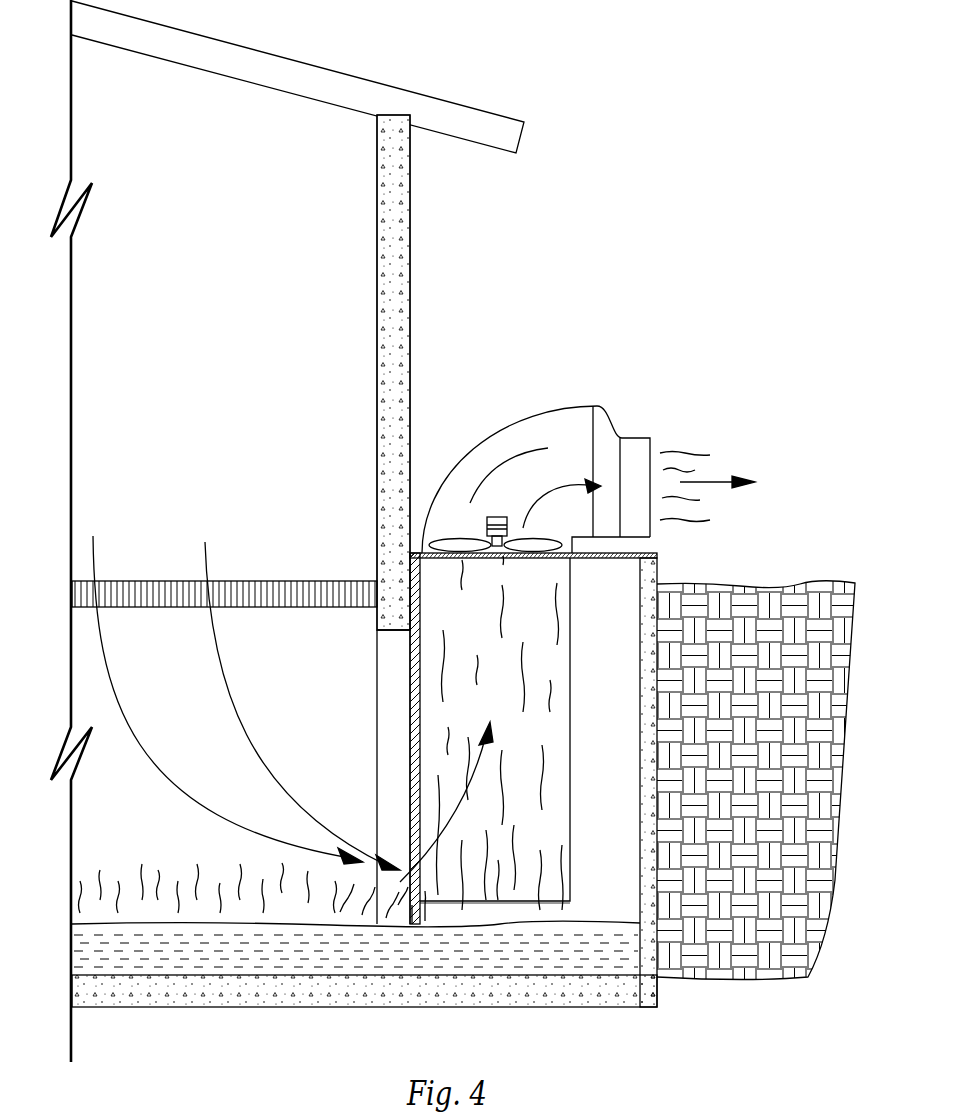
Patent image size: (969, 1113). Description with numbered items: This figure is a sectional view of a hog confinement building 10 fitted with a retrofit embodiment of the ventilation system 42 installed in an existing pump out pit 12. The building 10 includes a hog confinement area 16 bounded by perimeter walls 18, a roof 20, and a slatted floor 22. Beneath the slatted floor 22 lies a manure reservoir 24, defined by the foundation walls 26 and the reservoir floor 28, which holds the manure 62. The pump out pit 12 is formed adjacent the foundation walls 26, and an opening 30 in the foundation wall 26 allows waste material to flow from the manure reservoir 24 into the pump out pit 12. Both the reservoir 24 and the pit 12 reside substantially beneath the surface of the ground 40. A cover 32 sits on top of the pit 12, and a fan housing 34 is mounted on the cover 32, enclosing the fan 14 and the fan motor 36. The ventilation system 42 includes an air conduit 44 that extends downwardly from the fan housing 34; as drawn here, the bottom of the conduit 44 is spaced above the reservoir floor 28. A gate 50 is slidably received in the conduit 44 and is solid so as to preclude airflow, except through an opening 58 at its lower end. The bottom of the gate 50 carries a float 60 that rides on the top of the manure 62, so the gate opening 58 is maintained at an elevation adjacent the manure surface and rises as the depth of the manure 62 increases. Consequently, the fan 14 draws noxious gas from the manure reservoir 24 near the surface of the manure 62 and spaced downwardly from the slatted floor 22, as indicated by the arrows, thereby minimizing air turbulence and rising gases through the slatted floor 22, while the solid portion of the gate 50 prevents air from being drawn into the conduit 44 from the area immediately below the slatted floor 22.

The hog confinement building 10 is at (600, 152).
The pump out pit 12 is at (617, 597).
The fan 14 is at (481, 549).
The hog confinement area 16 is at (97, 396).
The perimeter walls 18 is at (378, 418).
The roof 20 is at (300, 60).
The slatted floor 22 is at (185, 585).
The manure reservoir 24 is at (97, 640).
The foundation walls 26 is at (380, 621).
The reservoir floor 28 is at (178, 995).
The opening 30 is at (377, 741).
The cover 32 is at (651, 555).
The fan housing 34 is at (604, 422).
The fan motor 36 is at (497, 517).
The ground 40 is at (778, 590).
The ventilation system 42 is at (575, 811).
The air conduit 44 is at (571, 726).
The gate 50 is at (412, 818).
The opening 58 is at (410, 892).
The float 60 is at (415, 918).
The manure 62 is at (567, 957).